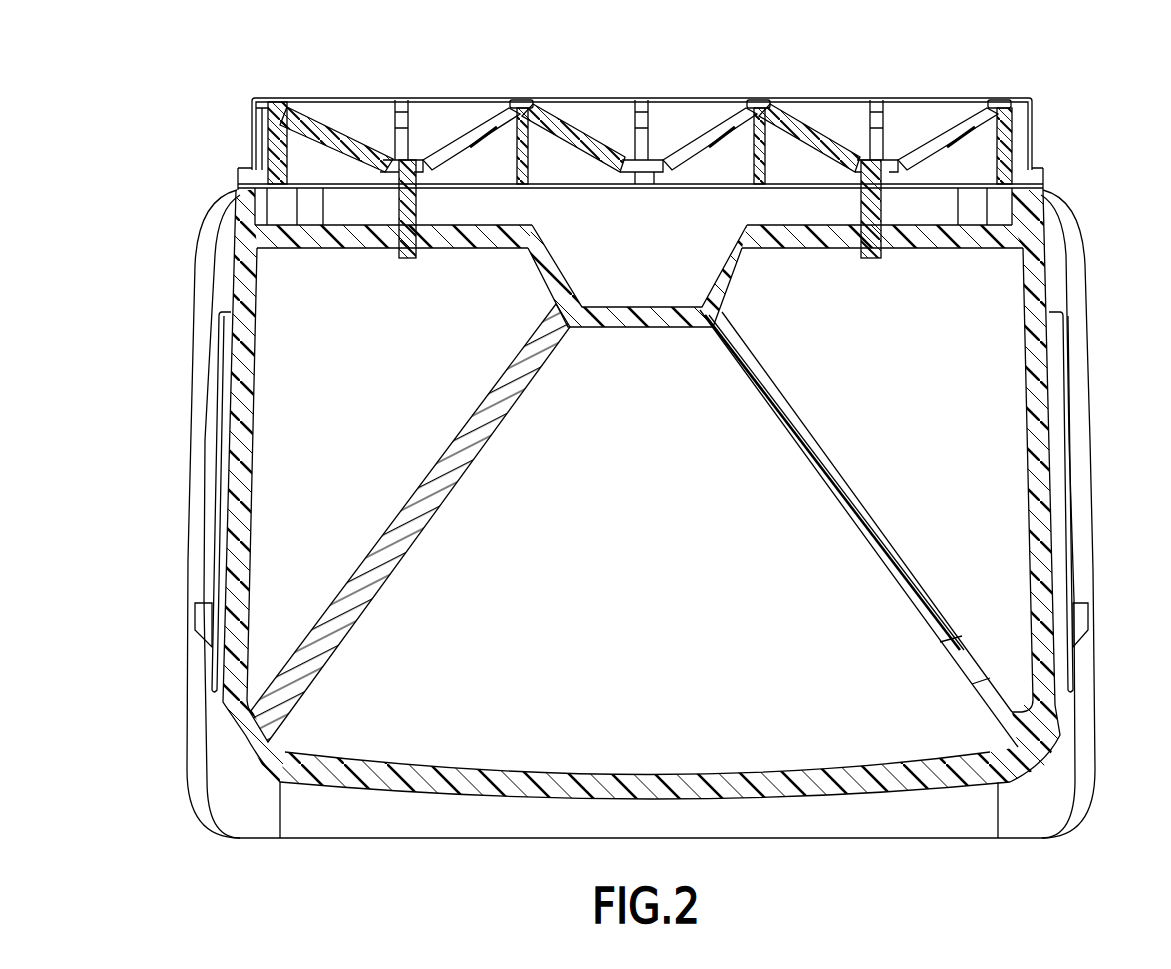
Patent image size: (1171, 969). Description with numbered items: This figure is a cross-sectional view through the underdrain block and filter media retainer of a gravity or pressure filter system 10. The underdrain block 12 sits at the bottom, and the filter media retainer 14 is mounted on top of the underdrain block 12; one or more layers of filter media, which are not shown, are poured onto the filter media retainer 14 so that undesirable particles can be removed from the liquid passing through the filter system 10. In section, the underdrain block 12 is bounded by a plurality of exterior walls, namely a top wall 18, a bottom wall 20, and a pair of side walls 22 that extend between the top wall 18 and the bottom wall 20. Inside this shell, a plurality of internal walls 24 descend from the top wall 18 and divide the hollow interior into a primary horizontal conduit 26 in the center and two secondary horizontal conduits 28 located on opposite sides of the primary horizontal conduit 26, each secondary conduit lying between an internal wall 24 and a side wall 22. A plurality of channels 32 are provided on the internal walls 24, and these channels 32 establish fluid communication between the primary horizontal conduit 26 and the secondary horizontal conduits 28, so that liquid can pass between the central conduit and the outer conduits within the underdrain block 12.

The filter system 10 is at (316, 90).
The underdrain block 12 is at (1086, 270).
The filter media retainer 14 is at (1036, 121).
The top wall 18 is at (462, 249).
The bottom wall 20 is at (641, 776).
The side walls 22 is at (1026, 302).
The internal walls 24 is at (730, 352).
The primary horizontal conduit 26 is at (655, 592).
The secondary horizontal conduits 28 is at (376, 394).
The channels 32 is at (325, 666).